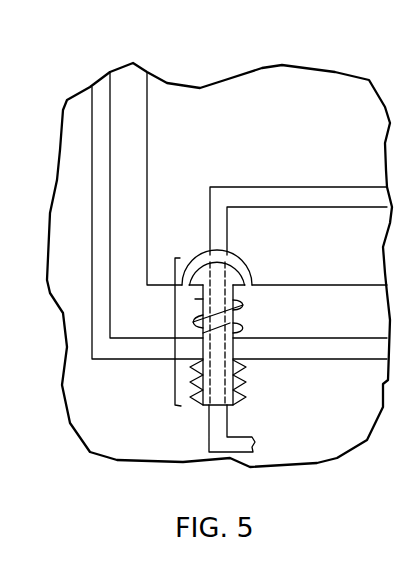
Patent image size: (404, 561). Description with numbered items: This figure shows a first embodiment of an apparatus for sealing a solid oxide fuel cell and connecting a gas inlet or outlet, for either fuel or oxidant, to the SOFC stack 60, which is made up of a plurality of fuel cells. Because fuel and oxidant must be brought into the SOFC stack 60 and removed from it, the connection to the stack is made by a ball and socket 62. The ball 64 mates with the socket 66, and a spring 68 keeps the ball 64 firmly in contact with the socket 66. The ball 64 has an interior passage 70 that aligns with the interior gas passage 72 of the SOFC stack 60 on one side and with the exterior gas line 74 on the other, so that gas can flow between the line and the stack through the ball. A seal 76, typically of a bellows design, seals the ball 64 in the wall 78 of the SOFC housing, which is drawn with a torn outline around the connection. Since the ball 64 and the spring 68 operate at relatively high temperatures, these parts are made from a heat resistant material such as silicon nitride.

The SOFC stack 60 is at (252, 85).
The ball and socket 62 is at (174, 330).
The ball 64 is at (240, 278).
The socket 66 is at (207, 253).
The spring 68 is at (243, 323).
The interior passage 70 is at (218, 338).
The interior gas passage 72 is at (287, 195).
The exterior gas line 74 is at (250, 445).
The seal 76 is at (247, 380).
The wall 78 is at (100, 222).